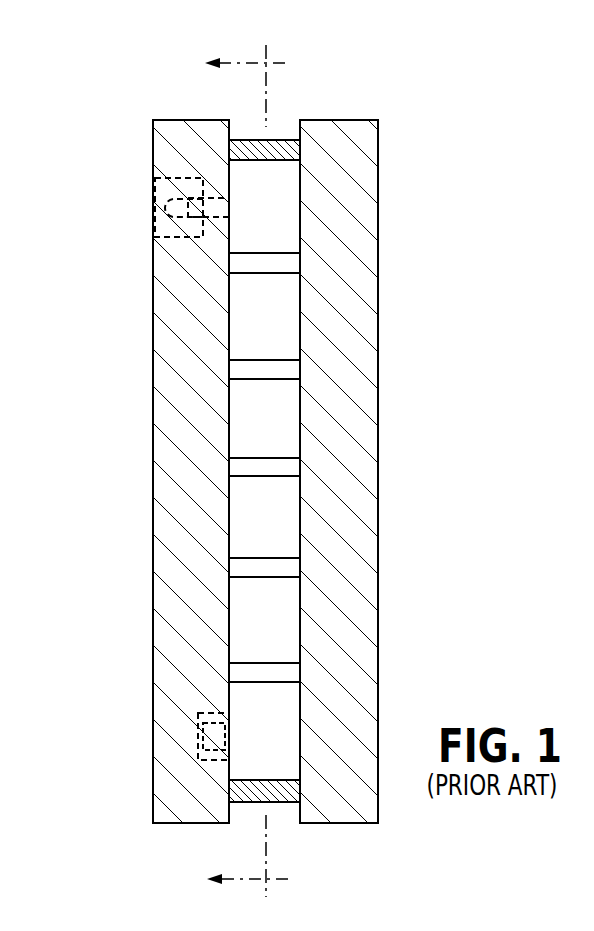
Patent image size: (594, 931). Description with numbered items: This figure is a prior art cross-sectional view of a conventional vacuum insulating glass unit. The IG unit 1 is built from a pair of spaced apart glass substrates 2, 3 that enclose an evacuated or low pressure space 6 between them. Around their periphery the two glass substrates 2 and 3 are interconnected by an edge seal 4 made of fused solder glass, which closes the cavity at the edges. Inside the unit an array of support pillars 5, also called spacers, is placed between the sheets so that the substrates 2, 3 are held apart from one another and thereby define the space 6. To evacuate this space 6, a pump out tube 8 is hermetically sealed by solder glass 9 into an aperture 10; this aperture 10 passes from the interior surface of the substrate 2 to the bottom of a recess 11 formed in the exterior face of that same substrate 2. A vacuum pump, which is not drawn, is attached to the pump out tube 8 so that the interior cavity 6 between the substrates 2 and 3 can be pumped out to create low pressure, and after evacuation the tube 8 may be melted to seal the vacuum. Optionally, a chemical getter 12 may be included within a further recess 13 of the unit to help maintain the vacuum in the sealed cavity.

The IG unit 1 is at (392, 212).
The glass substrate 2 is at (153, 523).
The glass substrate 3 is at (347, 393).
The edge seal 4 is at (281, 150).
The support pillars 5 is at (271, 467).
The evacuated space 6 is at (250, 605).
The pump out tube 8 is at (168, 208).
The solder glass 9 is at (197, 190).
The aperture 10 is at (218, 200).
The recess 11 is at (169, 245).
The chemical getter 12 is at (205, 735).
The recess 13 is at (206, 766).